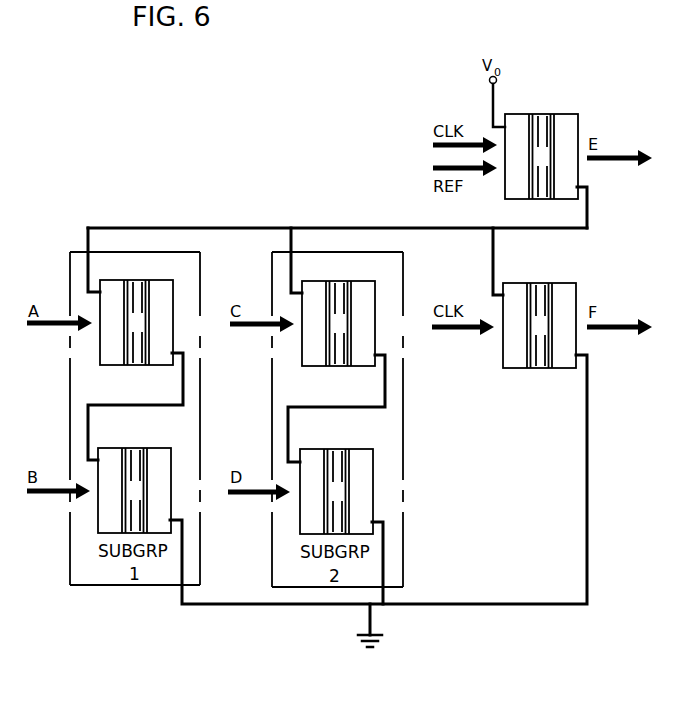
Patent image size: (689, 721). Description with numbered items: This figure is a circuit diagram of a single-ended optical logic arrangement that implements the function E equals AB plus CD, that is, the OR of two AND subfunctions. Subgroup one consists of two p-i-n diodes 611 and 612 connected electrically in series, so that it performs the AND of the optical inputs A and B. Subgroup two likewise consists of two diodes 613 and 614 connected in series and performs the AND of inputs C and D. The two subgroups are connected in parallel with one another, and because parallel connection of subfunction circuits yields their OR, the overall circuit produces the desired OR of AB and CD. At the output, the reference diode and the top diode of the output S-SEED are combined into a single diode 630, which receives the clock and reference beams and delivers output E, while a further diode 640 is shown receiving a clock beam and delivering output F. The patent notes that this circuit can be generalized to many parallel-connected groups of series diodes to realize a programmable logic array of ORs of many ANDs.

The p-i-n diode 611 is at (140, 280).
The p-i-n diode 612 is at (138, 448).
The diode 613 is at (340, 281).
The diode 614 is at (338, 449).
The diode 630 is at (544, 114).
The n-i-p optical logic device (CLK input, output F) 640 is at (542, 283).